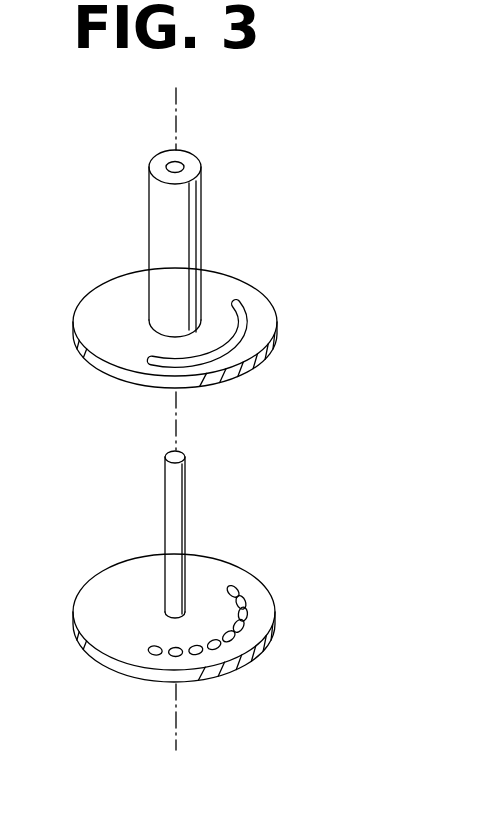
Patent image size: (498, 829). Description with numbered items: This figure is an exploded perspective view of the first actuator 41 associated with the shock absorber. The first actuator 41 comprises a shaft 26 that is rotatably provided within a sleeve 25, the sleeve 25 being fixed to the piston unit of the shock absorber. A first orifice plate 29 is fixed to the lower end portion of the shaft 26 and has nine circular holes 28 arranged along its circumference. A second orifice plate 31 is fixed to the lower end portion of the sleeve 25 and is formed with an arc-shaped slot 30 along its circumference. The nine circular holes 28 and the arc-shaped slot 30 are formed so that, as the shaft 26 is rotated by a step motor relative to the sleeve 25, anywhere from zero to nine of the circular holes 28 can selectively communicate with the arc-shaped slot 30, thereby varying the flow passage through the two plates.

The sleeve 25 is at (193, 220).
The shaft 26 is at (178, 510).
The circular holes 28 is at (232, 586).
The first orifice plate 29 is at (97, 588).
The arc-shaped slot 30 is at (240, 310).
The second orifice plate 31 is at (103, 292).
The first actuator 41 is at (380, 222).